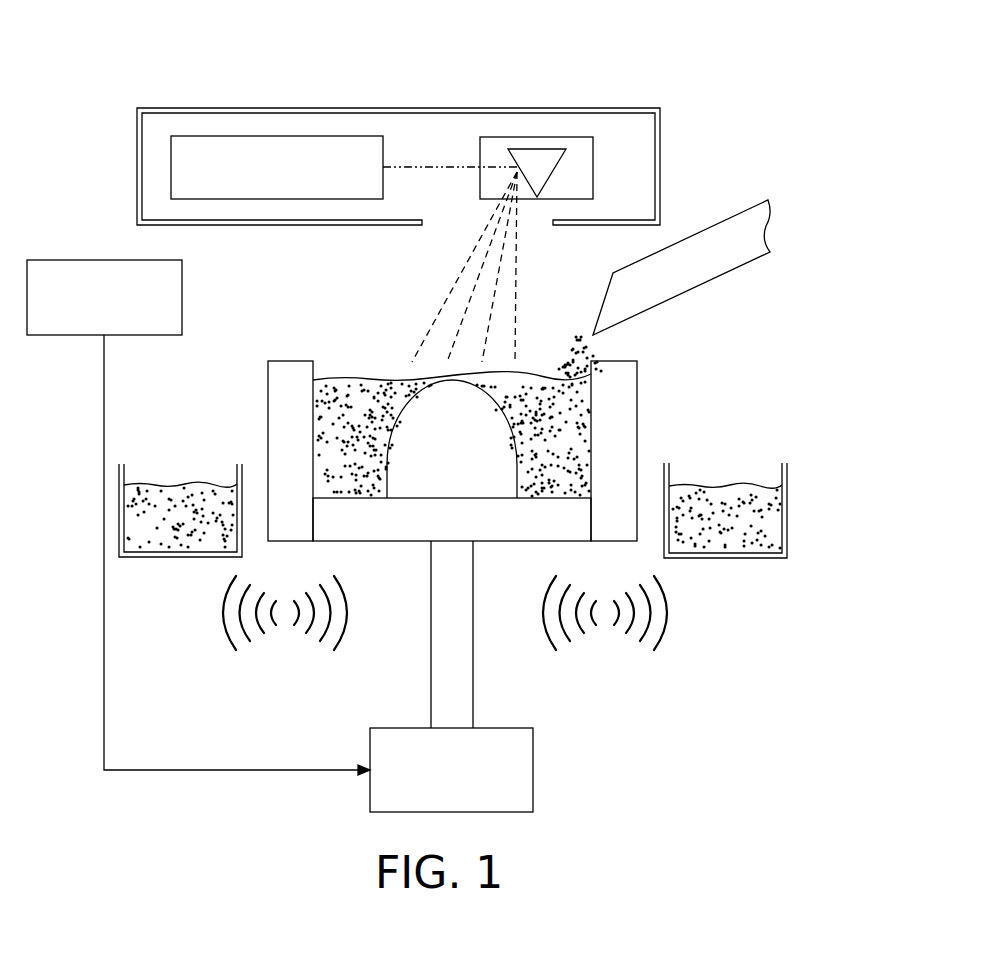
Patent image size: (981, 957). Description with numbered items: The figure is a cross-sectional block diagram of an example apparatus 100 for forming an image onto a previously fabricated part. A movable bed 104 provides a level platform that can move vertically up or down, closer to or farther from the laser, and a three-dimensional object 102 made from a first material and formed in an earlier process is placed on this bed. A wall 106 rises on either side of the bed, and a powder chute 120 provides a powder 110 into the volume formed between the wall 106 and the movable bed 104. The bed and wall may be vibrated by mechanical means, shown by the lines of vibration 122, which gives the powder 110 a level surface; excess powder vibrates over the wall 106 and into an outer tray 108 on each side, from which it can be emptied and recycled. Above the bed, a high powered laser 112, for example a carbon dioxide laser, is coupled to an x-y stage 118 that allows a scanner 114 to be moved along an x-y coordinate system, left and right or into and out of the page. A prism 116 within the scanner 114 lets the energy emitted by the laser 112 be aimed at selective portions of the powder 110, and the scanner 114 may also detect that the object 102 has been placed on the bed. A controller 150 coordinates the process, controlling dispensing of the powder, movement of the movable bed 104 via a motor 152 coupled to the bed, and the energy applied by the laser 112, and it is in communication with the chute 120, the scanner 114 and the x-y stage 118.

The apparatus 100 is at (668, 83).
The 3D object 102 is at (452, 439).
The movable bed 104 is at (390, 528).
The wall 106 is at (268, 415).
The outer tray 108 is at (200, 548).
The powder 110 is at (373, 380).
The high powered laser 112 is at (344, 167).
The scanner 114 is at (525, 137).
The prism 116 is at (550, 149).
The x-y stage 118 is at (660, 167).
The powder chute 120 is at (686, 290).
The vibration 122 is at (267, 632).
The controller 150 is at (183, 298).
The motor 152 is at (535, 770).